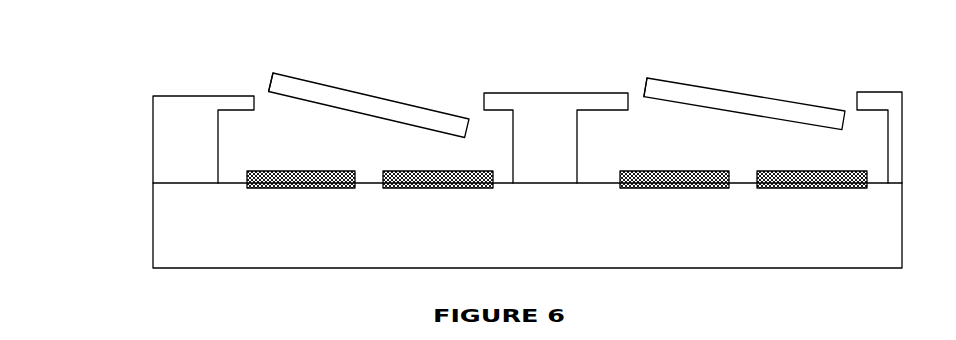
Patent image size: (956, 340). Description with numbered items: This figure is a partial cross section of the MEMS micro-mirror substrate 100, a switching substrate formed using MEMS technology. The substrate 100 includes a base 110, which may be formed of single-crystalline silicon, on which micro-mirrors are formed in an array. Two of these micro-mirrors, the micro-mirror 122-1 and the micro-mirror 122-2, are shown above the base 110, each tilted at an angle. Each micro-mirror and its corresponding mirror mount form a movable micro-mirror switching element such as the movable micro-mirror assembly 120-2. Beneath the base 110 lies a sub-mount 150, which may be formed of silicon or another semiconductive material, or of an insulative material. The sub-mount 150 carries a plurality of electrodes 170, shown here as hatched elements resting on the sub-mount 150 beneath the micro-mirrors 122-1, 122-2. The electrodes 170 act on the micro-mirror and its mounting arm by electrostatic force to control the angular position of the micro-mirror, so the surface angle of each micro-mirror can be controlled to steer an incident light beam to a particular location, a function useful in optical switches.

The MEMS micro-mirror substrate 100 is at (82, 127).
The base 110 is at (186, 140).
The movable micro-mirror assembly 120-2 is at (255, 70).
The micro-mirror 122-1 is at (372, 95).
The micro-mirror 122-2 is at (756, 112).
The sub-mount 150 is at (169, 245).
The electrodes 170 is at (307, 188).